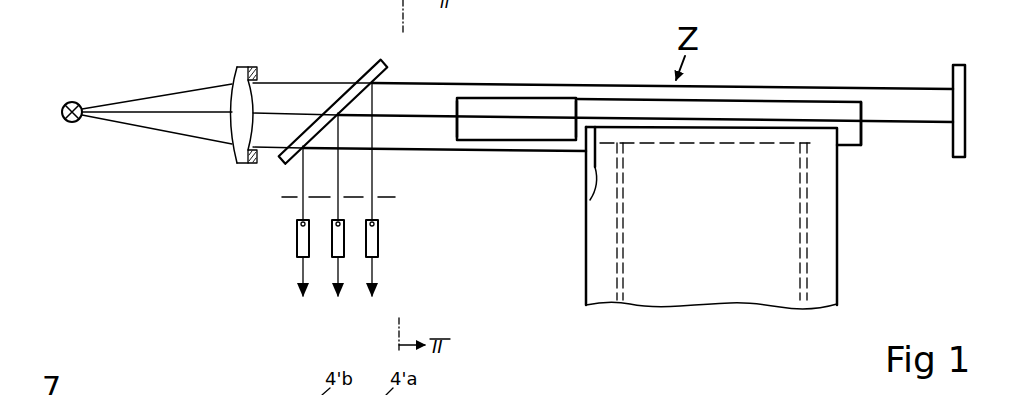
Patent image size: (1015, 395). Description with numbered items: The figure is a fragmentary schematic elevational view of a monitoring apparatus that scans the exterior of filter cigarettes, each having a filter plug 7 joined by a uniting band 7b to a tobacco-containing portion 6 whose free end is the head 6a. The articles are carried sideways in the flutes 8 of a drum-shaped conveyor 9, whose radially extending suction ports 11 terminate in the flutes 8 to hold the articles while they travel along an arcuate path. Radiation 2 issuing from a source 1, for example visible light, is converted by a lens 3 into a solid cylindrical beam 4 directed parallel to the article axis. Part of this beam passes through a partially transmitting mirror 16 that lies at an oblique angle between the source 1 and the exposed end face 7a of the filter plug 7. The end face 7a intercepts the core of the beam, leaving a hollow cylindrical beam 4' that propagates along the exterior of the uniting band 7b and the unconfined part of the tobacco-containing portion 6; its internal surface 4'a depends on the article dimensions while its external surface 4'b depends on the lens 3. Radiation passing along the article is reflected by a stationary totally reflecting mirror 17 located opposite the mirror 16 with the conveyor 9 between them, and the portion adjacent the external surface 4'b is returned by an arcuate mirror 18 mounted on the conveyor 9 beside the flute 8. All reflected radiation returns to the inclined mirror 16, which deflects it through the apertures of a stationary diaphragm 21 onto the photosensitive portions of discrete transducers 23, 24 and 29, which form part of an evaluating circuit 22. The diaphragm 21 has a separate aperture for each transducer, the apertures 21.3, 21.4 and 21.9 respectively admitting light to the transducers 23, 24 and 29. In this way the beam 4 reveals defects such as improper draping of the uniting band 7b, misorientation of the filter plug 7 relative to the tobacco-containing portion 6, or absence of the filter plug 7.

The radiation source 1 is at (78, 103).
The radiation 2 is at (115, 120).
The lens 3 is at (242, 70).
The solid cylindrical beam 4 is at (312, 86).
The hollow cylindrical beam 4' is at (444, 120).
The internal surface of hollow cylindrical beam 4'a is at (645, 122).
The external surface of hollow cylindrical beam 4'b is at (662, 108).
The partially transmitting mirror 16 is at (376, 58).
The filter plug 7 is at (558, 108).
The end face of filter plug 7a is at (457, 115).
The uniting band 7b is at (578, 106).
The tobacco-containing portion 6 is at (773, 110).
The head of tobacco-containing portion 6a is at (866, 108).
The flute 8 is at (820, 145).
The drum-shaped conveyor 9 is at (825, 283).
The suction port 11 is at (618, 302).
The totally reflecting mirror 17 is at (958, 160).
The arcuate mirror 18 is at (593, 200).
The diaphragm 21 is at (238, 197).
The aperture of diaphragm 21.9 is at (300, 203).
The aperture of diaphragm 21.4 is at (345, 200).
The aperture of diaphragm 21.3 is at (376, 221).
The evaluating circuit 22 is at (269, 281).
The transducer 23 is at (332, 255).
The transducer 24 is at (378, 258).
The transducer 29 is at (297, 250).